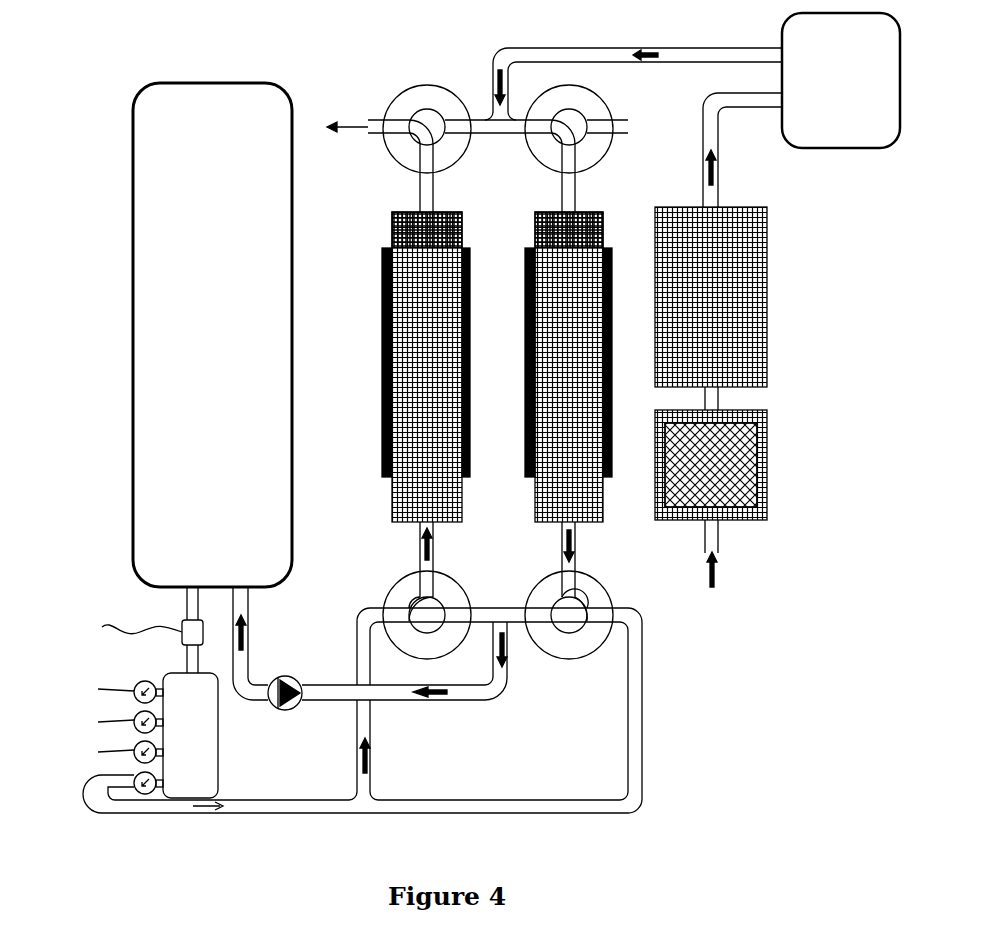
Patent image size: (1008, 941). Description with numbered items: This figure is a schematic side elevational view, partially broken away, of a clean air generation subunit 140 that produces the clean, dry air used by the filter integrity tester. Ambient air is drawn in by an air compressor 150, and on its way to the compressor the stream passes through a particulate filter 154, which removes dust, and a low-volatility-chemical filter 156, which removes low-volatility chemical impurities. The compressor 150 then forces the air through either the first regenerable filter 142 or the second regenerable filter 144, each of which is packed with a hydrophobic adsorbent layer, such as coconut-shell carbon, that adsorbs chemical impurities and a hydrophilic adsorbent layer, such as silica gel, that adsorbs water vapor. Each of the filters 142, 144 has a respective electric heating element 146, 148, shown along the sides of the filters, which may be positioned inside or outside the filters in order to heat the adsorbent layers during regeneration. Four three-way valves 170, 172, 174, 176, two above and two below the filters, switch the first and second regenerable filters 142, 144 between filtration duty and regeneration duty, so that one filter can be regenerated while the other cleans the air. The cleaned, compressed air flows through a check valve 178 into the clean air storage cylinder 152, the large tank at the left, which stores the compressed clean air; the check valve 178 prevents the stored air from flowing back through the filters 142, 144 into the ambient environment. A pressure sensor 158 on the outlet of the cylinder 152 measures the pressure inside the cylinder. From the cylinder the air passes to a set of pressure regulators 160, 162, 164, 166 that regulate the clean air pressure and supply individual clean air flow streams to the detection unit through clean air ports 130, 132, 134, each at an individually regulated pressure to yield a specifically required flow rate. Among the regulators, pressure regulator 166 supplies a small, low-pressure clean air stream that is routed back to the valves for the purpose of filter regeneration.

The clean air port 130 is at (112, 693).
The clean air port 132 is at (125, 721).
The clean air port 134 is at (107, 748).
The clean air generation subunit 140 is at (689, 317).
The first regenerable filter 142 is at (418, 322).
The second regenerable filter 144 is at (555, 338).
The electric heating element 146 is at (382, 475).
The electric heating element 148 is at (533, 475).
The air compressor 150 is at (803, 58).
The clean air storage cylinder 152 is at (265, 232).
The particulate filter 154 is at (735, 460).
The low-volatility-chemical filter 156 is at (733, 270).
The pressure sensor 158 is at (188, 630).
The pressure regulator 160 is at (138, 682).
The pressure regulator 162 is at (133, 715).
The pressure regulator 164 is at (133, 748).
The pressure regulator 166 is at (133, 775).
The three-way valve 170 is at (408, 97).
The three-way valve 172 is at (582, 103).
The three-way valve 174 is at (410, 593).
The three-way valve 176 is at (557, 593).
The check valve 178 is at (290, 683).